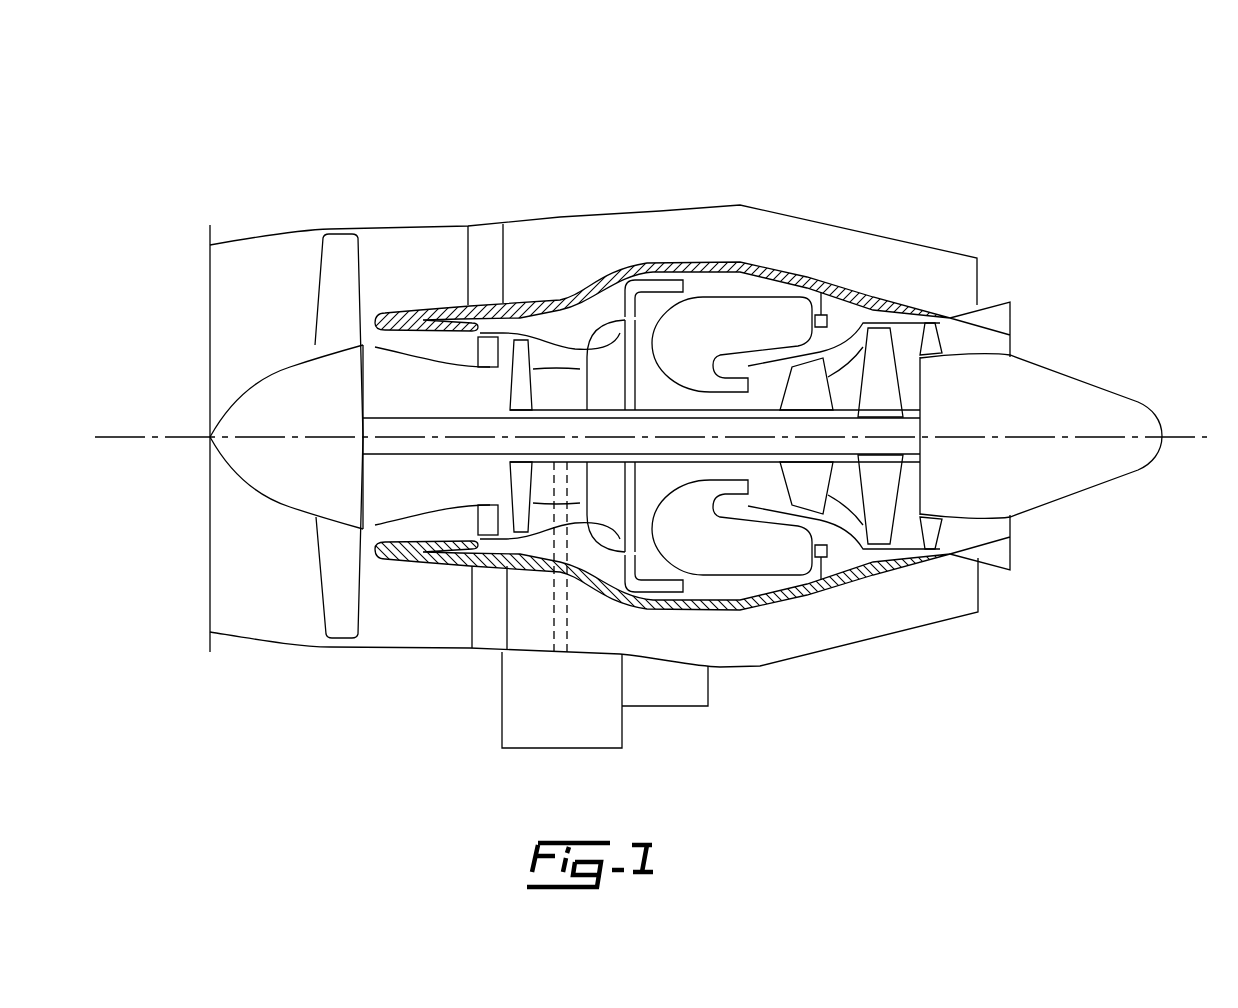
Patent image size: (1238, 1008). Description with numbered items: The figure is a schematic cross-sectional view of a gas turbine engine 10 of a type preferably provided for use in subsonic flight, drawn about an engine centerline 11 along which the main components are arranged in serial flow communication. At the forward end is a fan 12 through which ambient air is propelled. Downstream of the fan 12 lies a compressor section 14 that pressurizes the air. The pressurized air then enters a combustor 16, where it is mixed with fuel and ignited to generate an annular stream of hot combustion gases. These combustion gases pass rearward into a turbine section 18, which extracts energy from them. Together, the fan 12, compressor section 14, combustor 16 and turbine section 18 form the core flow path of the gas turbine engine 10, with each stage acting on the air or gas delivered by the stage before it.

The gas turbine engine 10 is at (862, 148).
The engine centerline axis 11 is at (1193, 436).
The fan 12 is at (337, 568).
The compressor section 14 is at (553, 346).
The combustor 16 is at (732, 313).
The turbine section 18 is at (846, 490).